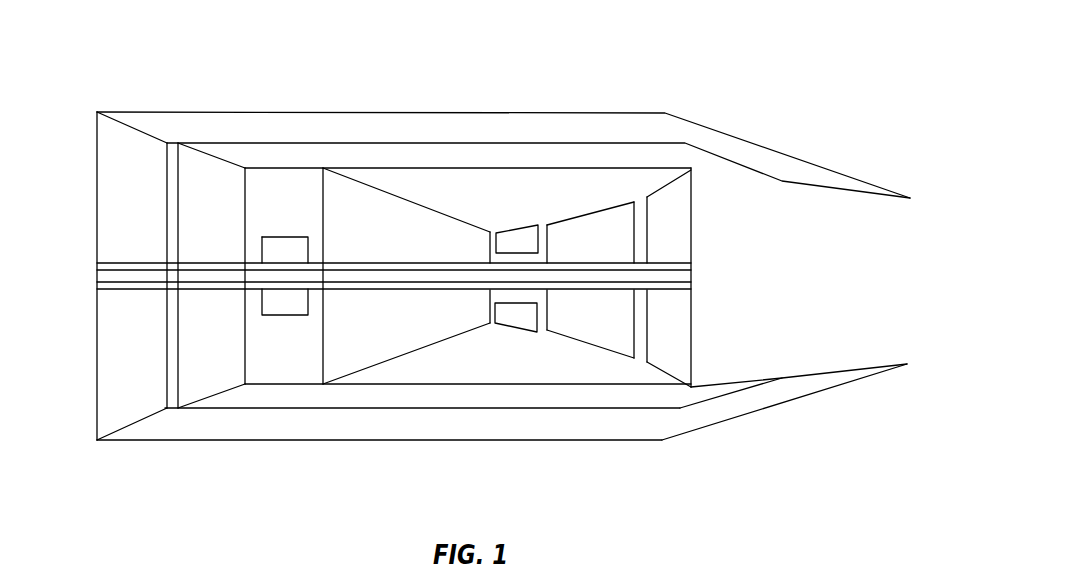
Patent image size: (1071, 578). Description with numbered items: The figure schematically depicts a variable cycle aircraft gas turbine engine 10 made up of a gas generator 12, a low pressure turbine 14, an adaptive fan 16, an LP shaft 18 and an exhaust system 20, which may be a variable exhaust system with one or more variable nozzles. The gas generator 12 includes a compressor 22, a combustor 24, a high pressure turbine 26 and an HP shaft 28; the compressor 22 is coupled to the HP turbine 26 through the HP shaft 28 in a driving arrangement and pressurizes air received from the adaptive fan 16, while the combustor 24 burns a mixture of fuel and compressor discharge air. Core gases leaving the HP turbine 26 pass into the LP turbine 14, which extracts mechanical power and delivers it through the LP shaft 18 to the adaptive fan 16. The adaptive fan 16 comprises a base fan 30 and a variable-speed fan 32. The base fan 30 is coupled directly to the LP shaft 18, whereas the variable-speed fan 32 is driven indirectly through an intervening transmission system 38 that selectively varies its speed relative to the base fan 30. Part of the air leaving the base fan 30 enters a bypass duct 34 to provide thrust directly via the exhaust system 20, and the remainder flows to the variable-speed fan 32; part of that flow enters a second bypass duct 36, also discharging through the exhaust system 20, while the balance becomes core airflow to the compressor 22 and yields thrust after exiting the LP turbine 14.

The variable cycle gas turbine engine 10 is at (823, 63).
The gas generator 12 is at (660, 453).
The low pressure turbine 14 is at (692, 370).
The adaptive fan 16 is at (245, 452).
The LP shaft 18 is at (637, 291).
The exhaust system 20 is at (863, 368).
The compressor 22 is at (422, 205).
The combustor 24 is at (503, 230).
The high pressure turbine 26 is at (610, 204).
The HP shaft 28 is at (492, 292).
The base fan 30 is at (97, 122).
The variable-speed fan 32 is at (167, 168).
The bypass duct 34 is at (220, 112).
The bypass duct 36 is at (312, 142).
The transmission system 38 is at (296, 236).